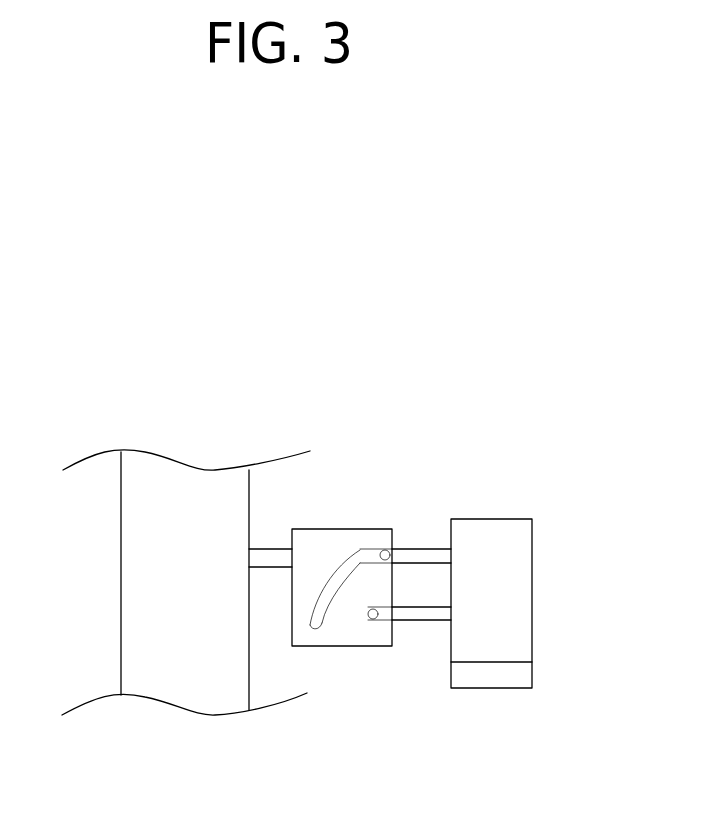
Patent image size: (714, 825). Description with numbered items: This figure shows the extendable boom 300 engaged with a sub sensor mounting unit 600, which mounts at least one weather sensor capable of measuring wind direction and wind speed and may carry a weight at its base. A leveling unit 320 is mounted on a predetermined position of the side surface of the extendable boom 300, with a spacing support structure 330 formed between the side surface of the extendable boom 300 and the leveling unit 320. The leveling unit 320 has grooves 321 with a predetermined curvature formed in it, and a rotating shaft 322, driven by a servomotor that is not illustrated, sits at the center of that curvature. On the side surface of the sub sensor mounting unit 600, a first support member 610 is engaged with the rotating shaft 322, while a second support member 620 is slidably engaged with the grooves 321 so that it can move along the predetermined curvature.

The extendable boom 300 is at (128, 568).
The leveling unit 320 is at (315, 552).
The grooves 321 is at (363, 557).
The rotating shaft 322 is at (373, 620).
The spacing support structure 330 is at (268, 557).
The sub sensor mounting unit 600 is at (510, 555).
The first support member 610 is at (420, 613).
The second support member 620 is at (421, 553).